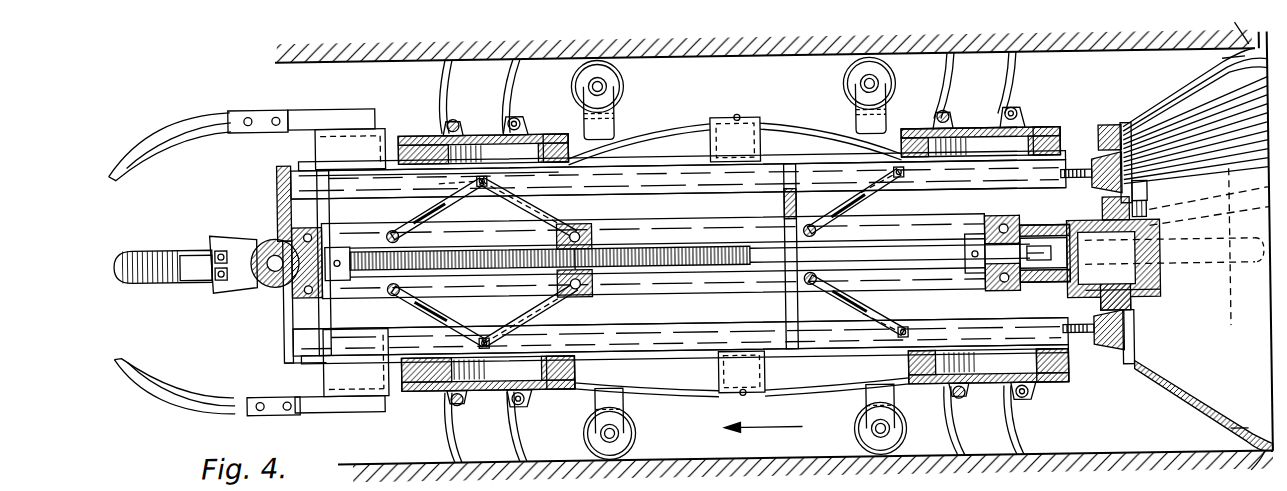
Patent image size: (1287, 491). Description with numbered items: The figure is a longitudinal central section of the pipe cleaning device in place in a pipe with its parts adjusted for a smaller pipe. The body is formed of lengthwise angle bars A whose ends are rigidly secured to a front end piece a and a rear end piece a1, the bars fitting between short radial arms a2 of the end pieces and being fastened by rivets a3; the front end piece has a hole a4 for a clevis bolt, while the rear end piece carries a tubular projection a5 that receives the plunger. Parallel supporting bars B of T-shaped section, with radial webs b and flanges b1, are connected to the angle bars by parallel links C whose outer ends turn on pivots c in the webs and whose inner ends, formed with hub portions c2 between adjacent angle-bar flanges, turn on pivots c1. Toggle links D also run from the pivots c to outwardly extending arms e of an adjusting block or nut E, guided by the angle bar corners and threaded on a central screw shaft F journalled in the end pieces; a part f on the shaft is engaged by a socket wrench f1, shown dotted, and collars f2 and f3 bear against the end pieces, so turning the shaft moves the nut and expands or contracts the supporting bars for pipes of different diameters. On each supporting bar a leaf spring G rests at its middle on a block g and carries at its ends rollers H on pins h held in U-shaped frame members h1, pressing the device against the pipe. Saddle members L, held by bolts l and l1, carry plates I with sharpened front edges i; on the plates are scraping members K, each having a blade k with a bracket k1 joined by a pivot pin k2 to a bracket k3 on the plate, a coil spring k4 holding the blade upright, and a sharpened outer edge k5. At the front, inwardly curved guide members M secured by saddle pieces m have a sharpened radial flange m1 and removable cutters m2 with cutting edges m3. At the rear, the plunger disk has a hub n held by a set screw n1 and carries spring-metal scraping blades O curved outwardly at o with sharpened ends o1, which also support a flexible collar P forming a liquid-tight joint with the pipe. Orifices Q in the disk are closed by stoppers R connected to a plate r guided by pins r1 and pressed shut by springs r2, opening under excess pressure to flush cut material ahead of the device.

The angle bars A is at (736, 222).
The supporting bars B is at (796, 168).
The parallel links C is at (458, 210).
The pivots c is at (490, 178).
The pivots c1 is at (400, 282).
The hub portions c2 is at (386, 232).
The toggle or adjusting links D is at (560, 220).
The arms or projections e is at (580, 232).
The adjusting block or nut E is at (592, 234).
The adjusting screw shaft F is at (690, 280).
The leaf spring or spring plate G is at (765, 122).
The supporting block g is at (742, 116).
The rollers or wheels H is at (627, 84).
The pivots or pins h is at (601, 82).
The U-shaped frame members h1 is at (617, 116).
The plates I is at (284, 340).
The front edges i is at (394, 148).
The scraping or cutting members K is at (512, 100).
The scraping or cutting blade k is at (452, 92).
The bracket k1 is at (525, 410).
The pivot pin k2 is at (524, 122).
The bracket k3 is at (1030, 134).
The coil spring k4 is at (972, 408).
The outer edges k5 is at (440, 74).
The saddle members L is at (568, 386).
The bolts l is at (572, 158).
The bolts l1 is at (429, 178).
The webs b is at (680, 258).
The flanges b1 is at (668, 130).
The guide members M is at (178, 118).
The saddle pieces m is at (375, 130).
The flange m1 is at (216, 112).
The cutters m2 is at (185, 243).
The cutting edges m3 is at (258, 106).
The front end piece a is at (272, 280).
The rear end piece a1 is at (1032, 287).
The arms or projections a2 is at (990, 268).
The rivets a3 is at (1003, 225).
The hole a4 is at (240, 236).
The tubular projection a5 is at (1150, 285).
The part f is at (1034, 252).
The socket wrench f1 is at (1174, 255).
The collar f2 is at (338, 262).
The collar f3 is at (972, 238).
The hub portion n is at (1160, 285).
The set screw n1 is at (1150, 198).
The scraping or cutting strips or blades O is at (1155, 118).
The outer portions o is at (1224, 243).
The extreme ends o1 is at (1241, 239).
The flexible diaphragm or collar P is at (1239, 262).
The holes or orifices Q is at (1120, 150).
The valve or stopper R is at (1093, 165).
The plate r is at (1101, 218).
The pins r1 is at (1070, 355).
The springs r2 is at (1095, 253).